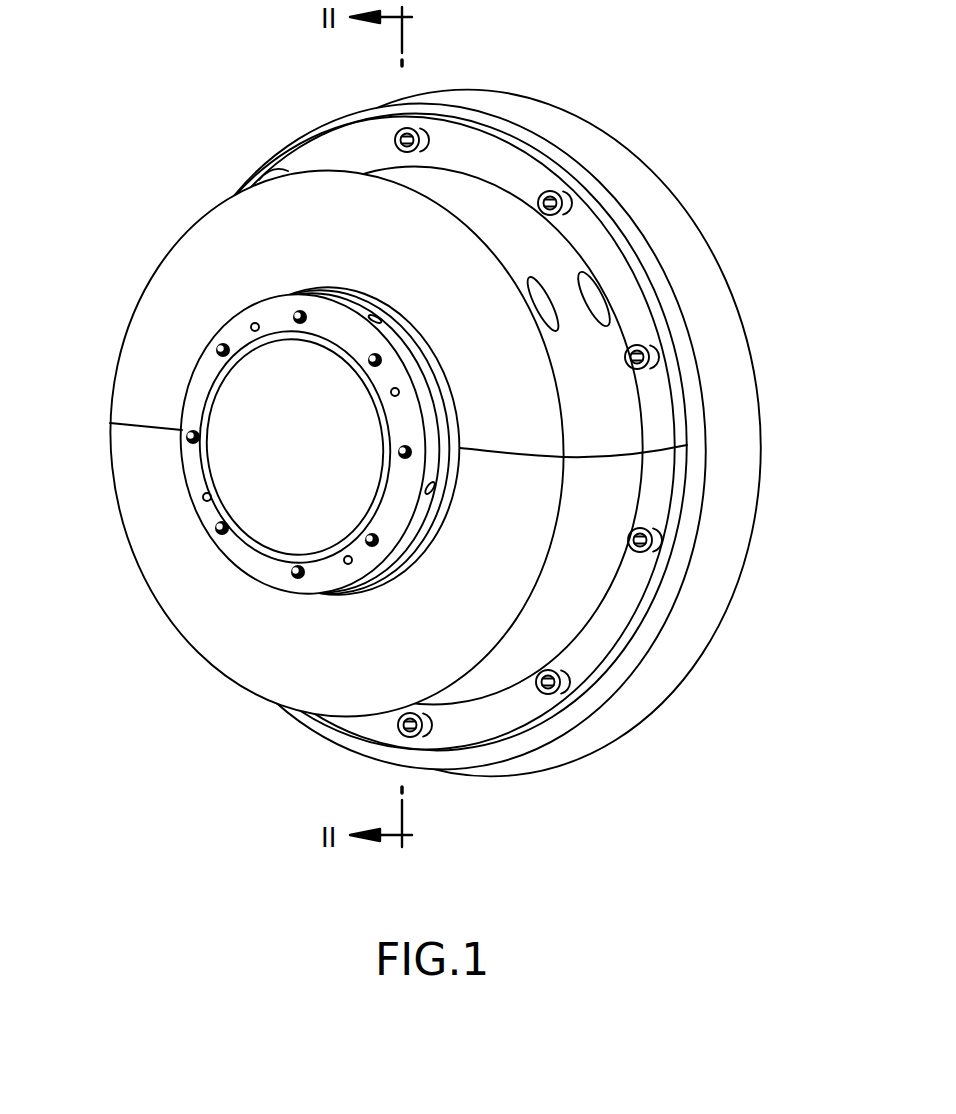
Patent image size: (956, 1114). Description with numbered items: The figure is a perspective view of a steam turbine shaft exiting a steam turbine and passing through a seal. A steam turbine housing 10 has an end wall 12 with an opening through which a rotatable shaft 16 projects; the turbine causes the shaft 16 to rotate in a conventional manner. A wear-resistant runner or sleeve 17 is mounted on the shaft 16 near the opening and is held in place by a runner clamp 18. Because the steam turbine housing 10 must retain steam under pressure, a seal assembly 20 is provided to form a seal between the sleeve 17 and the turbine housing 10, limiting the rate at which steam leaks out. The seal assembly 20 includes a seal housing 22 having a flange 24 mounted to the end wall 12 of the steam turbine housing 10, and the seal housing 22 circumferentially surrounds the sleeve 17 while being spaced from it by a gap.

The steam turbine housing 10 is at (677, 234).
The end wall 12 is at (552, 150).
The rotatable shaft 16 is at (245, 468).
The sleeve 17 is at (442, 511).
The runner clamp 18 is at (397, 548).
The seal assembly 20 is at (630, 416).
The seal housing 22 is at (191, 279).
The flange 24 is at (482, 152).